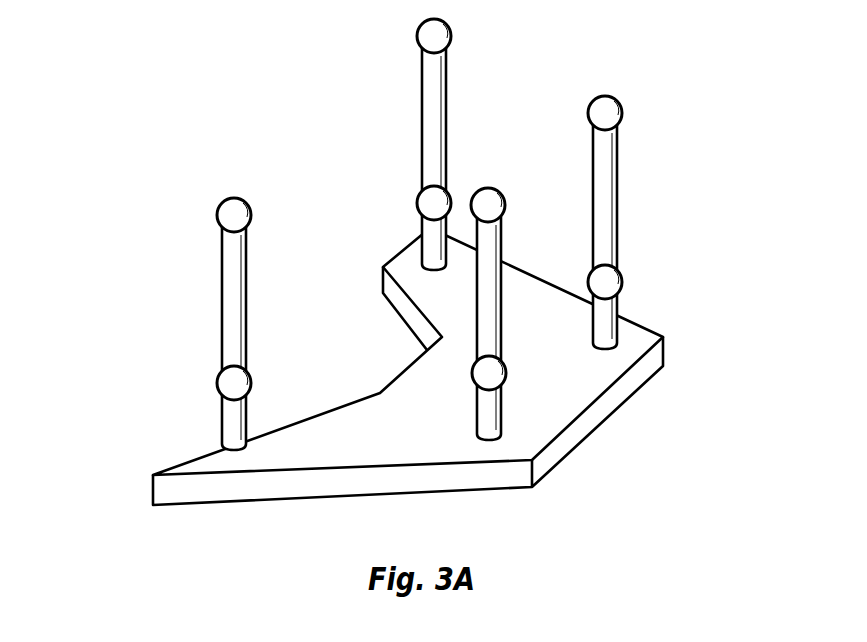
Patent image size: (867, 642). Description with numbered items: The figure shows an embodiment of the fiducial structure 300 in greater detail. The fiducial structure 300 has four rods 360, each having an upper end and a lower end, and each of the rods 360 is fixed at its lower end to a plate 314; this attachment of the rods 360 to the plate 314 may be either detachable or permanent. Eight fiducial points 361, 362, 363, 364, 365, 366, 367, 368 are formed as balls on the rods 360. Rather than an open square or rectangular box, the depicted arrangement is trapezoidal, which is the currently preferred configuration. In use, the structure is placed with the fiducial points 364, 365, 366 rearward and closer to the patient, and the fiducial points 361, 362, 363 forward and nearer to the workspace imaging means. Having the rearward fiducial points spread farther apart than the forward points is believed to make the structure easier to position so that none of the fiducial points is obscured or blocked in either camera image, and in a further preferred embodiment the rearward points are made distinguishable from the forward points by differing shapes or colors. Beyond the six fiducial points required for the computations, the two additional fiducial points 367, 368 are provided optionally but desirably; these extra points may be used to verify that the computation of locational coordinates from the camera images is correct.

The fiducial structure 300 is at (160, 201).
The plate 314 is at (568, 450).
The rods 360 is at (592, 173).
The fiducial point 361 is at (504, 203).
The fiducial point 362 is at (505, 380).
The fiducial point 363 is at (622, 282).
The fiducial point 364 is at (250, 203).
The fiducial point 365 is at (250, 382).
The fiducial point 366 is at (417, 200).
The fiducial point 367 is at (450, 33).
The fiducial point 368 is at (622, 110).